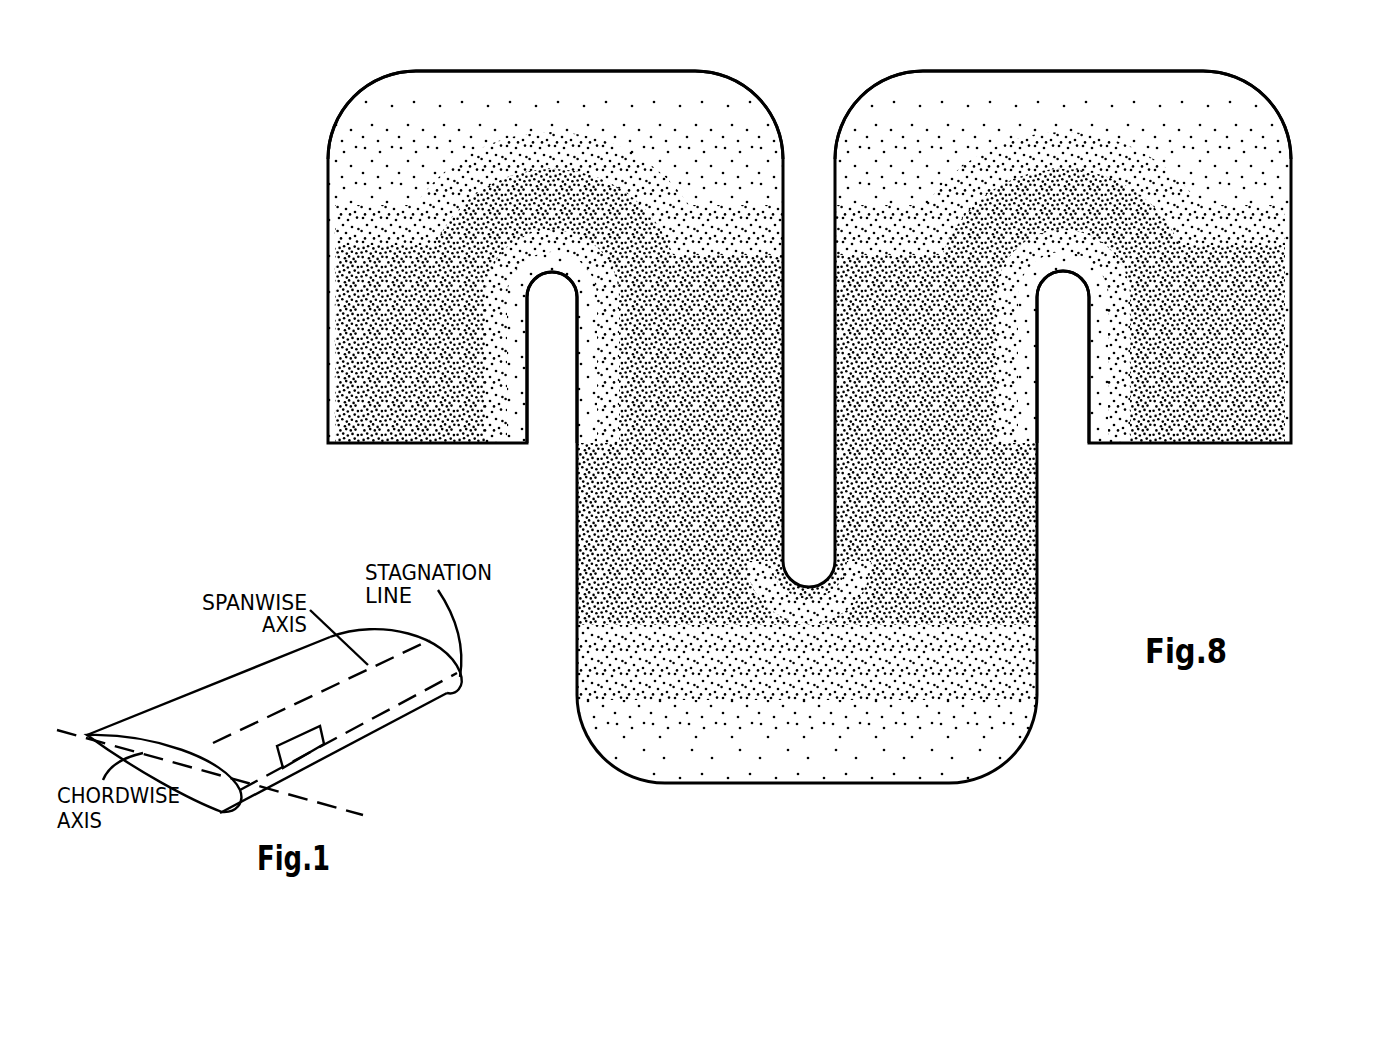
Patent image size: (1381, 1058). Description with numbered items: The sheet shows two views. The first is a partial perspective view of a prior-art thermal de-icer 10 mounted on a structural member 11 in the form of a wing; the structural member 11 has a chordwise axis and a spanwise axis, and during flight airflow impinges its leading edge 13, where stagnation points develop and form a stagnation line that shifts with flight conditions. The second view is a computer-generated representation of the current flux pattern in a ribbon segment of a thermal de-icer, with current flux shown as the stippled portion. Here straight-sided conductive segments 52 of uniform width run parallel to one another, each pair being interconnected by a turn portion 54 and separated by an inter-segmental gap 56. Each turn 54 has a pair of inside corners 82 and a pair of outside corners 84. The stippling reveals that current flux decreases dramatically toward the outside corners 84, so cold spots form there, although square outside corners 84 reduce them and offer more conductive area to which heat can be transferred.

In FIG. 1, the thermal de-icer 10 is at (336, 749).
In FIG. 1, the structural member 11 is at (220, 821).
In FIG. 1, the leading edge 13 is at (390, 719).
In FIG. 8, the conductive segment 52 is at (343, 220).
In FIG. 8, the turn portion 54 is at (586, 100).
In FIG. 8, the inter-segmental gap 56 is at (571, 369).
In FIG. 8, the inside corner 82 is at (534, 285).
In FIG. 8, the outside corner 84 is at (383, 127).